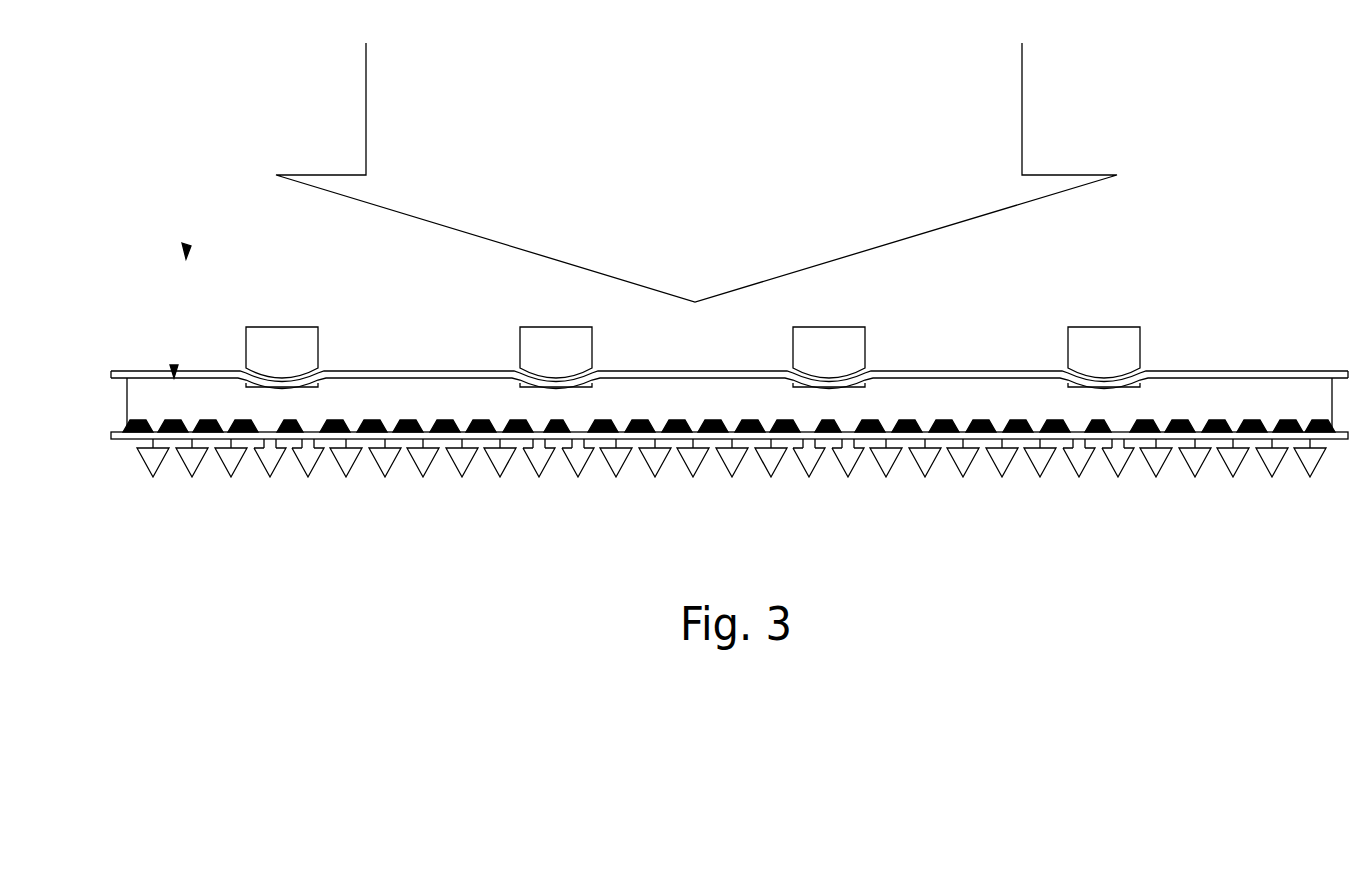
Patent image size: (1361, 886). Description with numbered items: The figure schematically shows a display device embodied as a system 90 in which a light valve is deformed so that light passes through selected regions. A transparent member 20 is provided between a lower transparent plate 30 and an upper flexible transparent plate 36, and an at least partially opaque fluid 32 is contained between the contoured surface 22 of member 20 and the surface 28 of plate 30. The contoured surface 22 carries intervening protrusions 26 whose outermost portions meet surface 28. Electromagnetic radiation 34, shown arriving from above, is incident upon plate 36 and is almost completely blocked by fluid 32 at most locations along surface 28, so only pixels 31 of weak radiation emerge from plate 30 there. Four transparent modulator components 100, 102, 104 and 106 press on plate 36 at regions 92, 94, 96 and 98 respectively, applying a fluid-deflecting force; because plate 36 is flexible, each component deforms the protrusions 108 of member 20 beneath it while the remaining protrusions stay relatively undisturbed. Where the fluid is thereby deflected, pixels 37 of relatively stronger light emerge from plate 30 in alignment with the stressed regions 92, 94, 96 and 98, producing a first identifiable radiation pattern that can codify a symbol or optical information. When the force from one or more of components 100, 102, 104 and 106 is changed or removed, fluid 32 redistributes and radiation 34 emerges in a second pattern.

The system 90 is at (183, 243).
The electromagnetic radiation 34 is at (673, 177).
The member 20 is at (111, 380).
The contoured surface 22 is at (180, 362).
The plate 36 is at (127, 376).
The fluid 32 is at (128, 424).
The surface 28 is at (112, 438).
The article 30 is at (150, 470).
The pixels 31 is at (1299, 482).
The pixels 37 is at (1116, 482).
The protrusions 26 is at (350, 414).
The protrusions 108 is at (1133, 412).
The modulator component 100 is at (284, 326).
The modulator component 102 is at (558, 326).
The modulator component 104 is at (831, 326).
The modulator component 106 is at (1104, 326).
The region 92 is at (282, 388).
The region 94 is at (556, 388).
The region 96 is at (829, 388).
The region 98 is at (1103, 388).